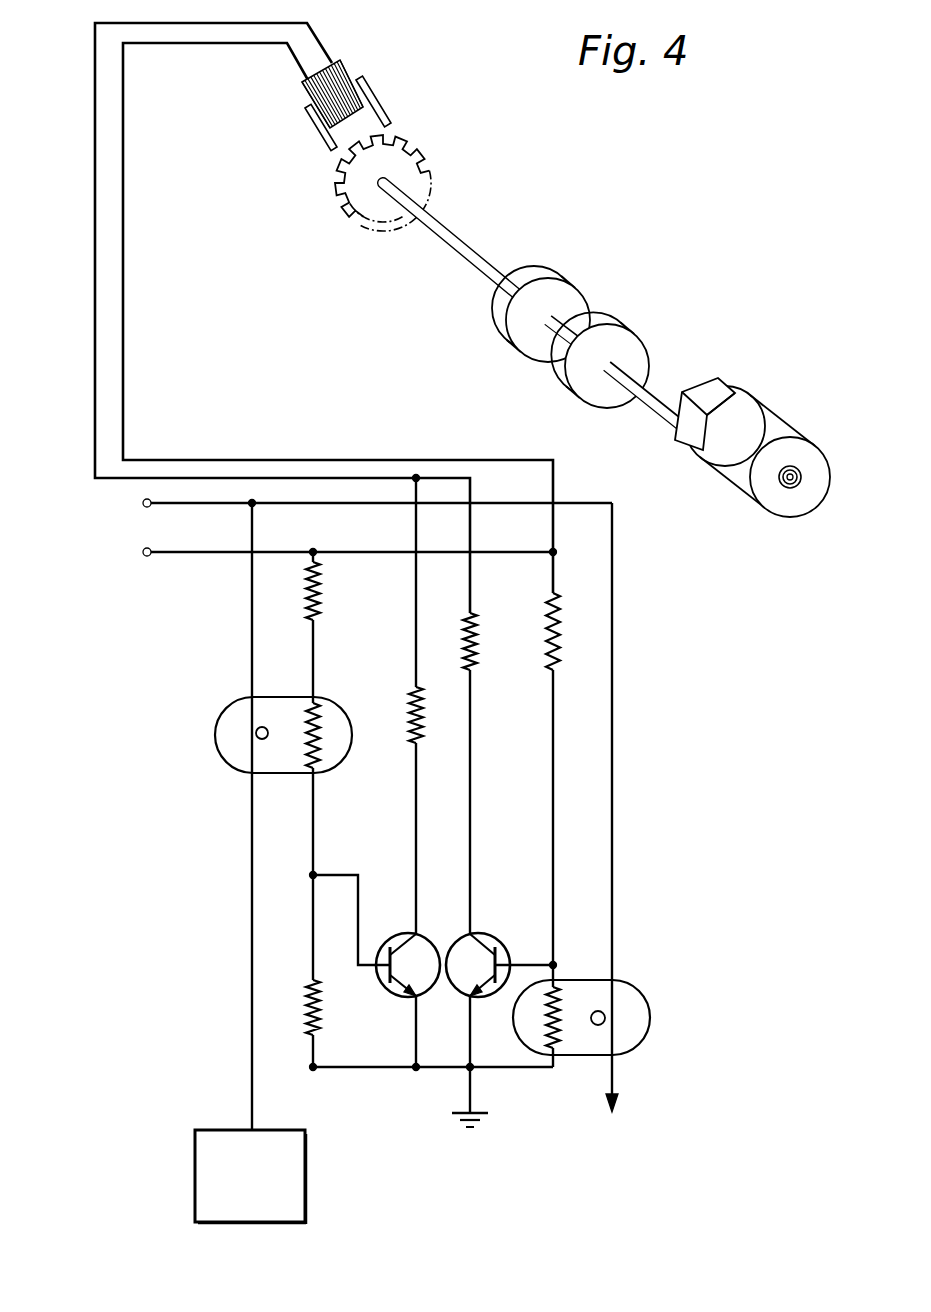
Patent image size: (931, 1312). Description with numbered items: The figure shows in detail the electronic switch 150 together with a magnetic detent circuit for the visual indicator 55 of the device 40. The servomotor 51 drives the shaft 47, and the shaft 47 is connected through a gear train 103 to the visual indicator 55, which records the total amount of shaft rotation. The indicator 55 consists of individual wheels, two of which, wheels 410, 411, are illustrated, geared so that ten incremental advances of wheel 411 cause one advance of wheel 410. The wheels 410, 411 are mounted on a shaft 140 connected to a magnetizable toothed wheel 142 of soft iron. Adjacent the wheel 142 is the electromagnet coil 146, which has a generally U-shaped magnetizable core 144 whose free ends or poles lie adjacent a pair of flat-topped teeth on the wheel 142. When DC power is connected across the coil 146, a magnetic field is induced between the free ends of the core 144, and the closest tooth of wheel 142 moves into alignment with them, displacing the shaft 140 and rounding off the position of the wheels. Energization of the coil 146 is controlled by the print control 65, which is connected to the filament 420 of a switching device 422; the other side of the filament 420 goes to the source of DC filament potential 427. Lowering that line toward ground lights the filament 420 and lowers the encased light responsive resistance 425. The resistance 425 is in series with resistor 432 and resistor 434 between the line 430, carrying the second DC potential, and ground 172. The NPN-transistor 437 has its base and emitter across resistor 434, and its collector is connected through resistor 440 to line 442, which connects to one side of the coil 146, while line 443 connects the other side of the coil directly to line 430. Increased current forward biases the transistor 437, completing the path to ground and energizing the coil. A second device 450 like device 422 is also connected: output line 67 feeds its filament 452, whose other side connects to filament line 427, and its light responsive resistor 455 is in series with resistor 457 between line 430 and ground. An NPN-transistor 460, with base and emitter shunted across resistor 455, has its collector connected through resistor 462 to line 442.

The device 40 is at (575, 334).
The shaft 47 is at (800, 483).
The motor 51 is at (774, 445).
The visual indicator 55 is at (575, 350).
The print control 65 is at (308, 1195).
The output line 67 is at (617, 1083).
The gear train 103 is at (693, 442).
The shaft 140 is at (470, 248).
The magnetizable toothed wheel 142 is at (378, 212).
The magnetizable core 144 is at (386, 116).
The electromagnet coil 146 is at (305, 93).
The electronic switch 150 is at (203, 859).
The ground 172 is at (458, 1112).
The wheel 410 is at (503, 348).
The wheel 411 is at (565, 387).
The filament 420 is at (262, 745).
The switching device 422 is at (277, 735).
The light responsive resistance 425 is at (320, 715).
The source of DC filament potential 427 is at (226, 508).
The line 430 is at (290, 551).
The resistor 432 is at (322, 582).
The resistor 434 is at (325, 1012).
The NPN-transistor 437 is at (402, 934).
The resistor 440 is at (412, 727).
The line 442 is at (97, 462).
The line 443 is at (124, 312).
The second device 450 is at (618, 1039).
The filament 452 is at (604, 1023).
The light responsive resistor 455 is at (562, 1032).
The resistor 457 is at (548, 657).
The NPN-transistor 460 is at (490, 934).
The resistor 462 is at (477, 632).